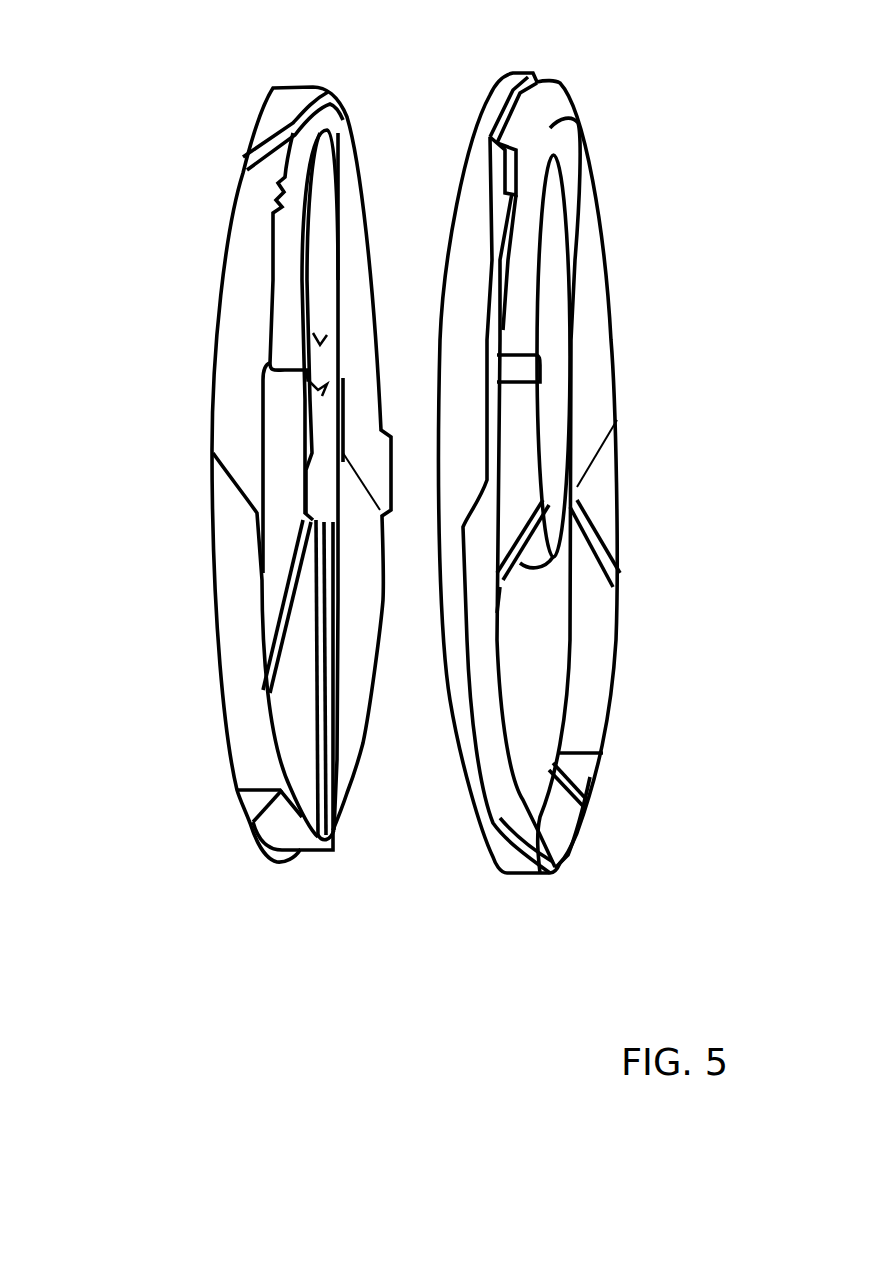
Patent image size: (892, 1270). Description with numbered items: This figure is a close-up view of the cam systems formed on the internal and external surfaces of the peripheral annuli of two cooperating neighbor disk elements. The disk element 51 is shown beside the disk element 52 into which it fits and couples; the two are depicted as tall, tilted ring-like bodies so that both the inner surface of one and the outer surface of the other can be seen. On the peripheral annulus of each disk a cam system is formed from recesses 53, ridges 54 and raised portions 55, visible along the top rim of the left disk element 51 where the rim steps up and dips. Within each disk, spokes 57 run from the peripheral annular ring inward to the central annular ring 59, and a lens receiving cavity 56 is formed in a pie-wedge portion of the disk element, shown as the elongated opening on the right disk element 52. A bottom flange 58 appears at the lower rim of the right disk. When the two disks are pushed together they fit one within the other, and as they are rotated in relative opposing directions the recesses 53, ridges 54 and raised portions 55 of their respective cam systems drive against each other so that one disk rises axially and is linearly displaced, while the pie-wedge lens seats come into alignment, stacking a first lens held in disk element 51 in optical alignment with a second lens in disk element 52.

The disk element 51 is at (249, 441).
The disk element 52 is at (562, 498).
The recesses 53 is at (270, 177).
The ridges 54 is at (248, 153).
The raised portions 55 is at (257, 97).
The lens receiving cavity 56 is at (557, 253).
The spokes 57 is at (500, 588).
The bottom flange 58 is at (505, 852).
The central annular ring 59 is at (527, 463).